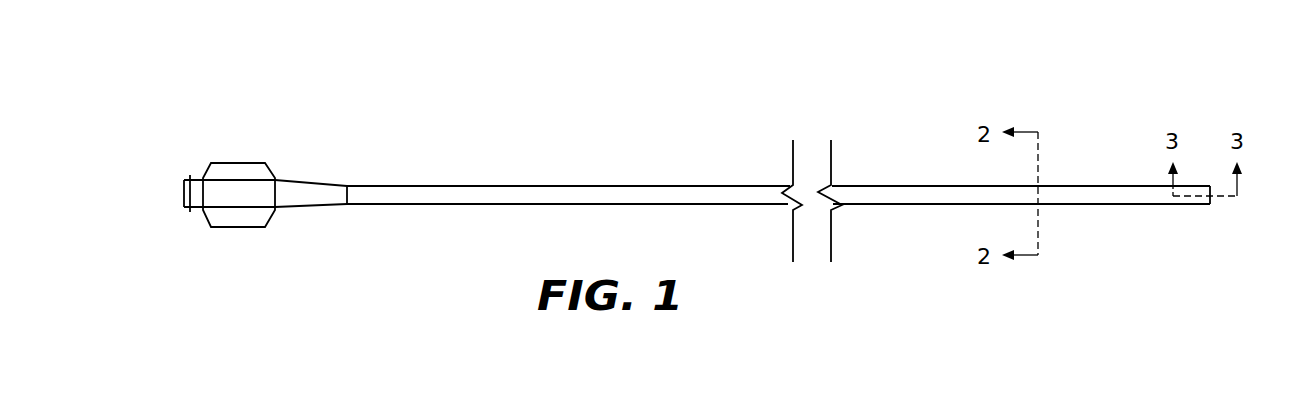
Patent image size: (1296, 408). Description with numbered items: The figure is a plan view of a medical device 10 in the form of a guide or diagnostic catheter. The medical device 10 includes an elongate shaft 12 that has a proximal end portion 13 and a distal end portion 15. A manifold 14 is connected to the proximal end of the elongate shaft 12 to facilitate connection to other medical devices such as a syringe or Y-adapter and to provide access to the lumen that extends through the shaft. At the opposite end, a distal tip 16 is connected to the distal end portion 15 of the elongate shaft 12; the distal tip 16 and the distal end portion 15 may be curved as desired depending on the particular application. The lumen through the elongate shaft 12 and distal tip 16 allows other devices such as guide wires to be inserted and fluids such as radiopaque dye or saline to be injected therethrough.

The medical device 10 is at (450, 76).
The elongate shaft 12 is at (680, 160).
The proximal end portion 13 is at (332, 162).
The manifold 14 is at (251, 248).
The distal end portion 15 is at (1167, 222).
The distal tip 16 is at (1190, 238).